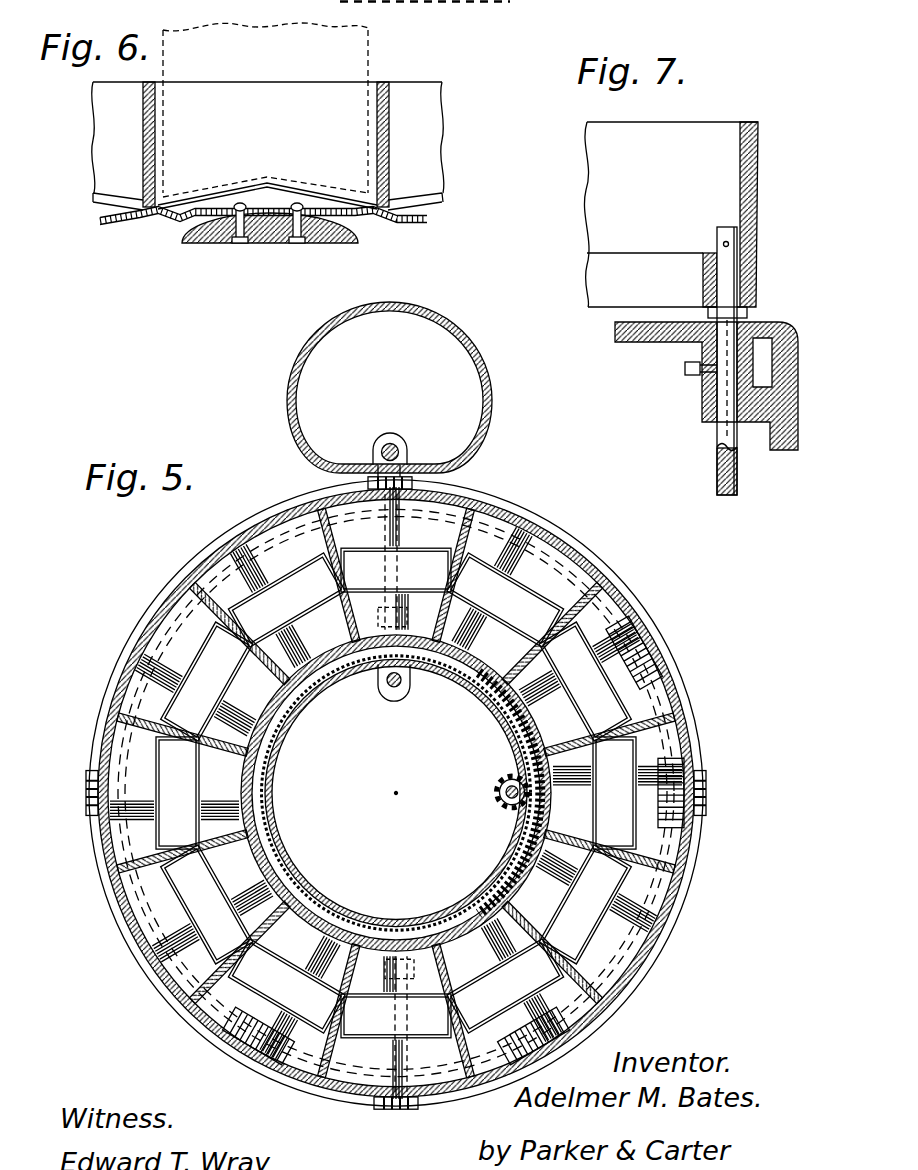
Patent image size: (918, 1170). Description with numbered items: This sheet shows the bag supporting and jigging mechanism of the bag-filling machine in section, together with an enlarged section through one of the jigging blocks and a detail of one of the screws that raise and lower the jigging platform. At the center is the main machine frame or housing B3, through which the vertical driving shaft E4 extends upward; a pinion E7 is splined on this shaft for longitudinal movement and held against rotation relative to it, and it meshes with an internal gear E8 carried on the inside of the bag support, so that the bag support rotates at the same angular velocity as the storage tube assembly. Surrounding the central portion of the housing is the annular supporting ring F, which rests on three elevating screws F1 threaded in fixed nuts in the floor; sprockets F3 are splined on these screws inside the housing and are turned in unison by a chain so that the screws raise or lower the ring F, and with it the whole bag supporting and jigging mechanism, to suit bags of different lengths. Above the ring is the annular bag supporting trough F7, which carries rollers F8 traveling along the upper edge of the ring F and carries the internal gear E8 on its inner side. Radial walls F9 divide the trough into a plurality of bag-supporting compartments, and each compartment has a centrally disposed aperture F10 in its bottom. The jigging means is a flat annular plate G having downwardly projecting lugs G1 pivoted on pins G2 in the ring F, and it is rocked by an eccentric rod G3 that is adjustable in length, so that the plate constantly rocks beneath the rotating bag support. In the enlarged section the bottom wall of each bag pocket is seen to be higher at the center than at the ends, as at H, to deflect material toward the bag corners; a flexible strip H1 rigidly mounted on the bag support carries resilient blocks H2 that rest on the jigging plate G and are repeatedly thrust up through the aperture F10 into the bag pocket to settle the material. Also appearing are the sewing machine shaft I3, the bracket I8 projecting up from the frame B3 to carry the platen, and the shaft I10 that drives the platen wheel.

In FIG. 7, the annular supporting ring F is at (755, 172).
In FIG. 5, the annular supporting ring F is at (692, 886).
In FIG. 7, the elevating screw F1 is at (743, 480).
In FIG. 7, the sprocket F3 is at (685, 368).
In FIG. 6, the annular bag supporting trough F7 is at (412, 92).
In FIG. 5, the annular bag supporting trough F7 is at (692, 829).
In FIG. 5, the roller F8 is at (370, 479).
In FIG. 6, the radial wall F9 is at (377, 100).
In FIG. 5, the radial wall F9 is at (133, 722).
In FIG. 6, the aperture F10 is at (212, 193).
In FIG. 5, the aperture F10 is at (274, 637).
In FIG. 5, the jigging plate G is at (152, 906).
In FIG. 5, the lug G1 is at (396, 790).
In FIG. 5, the pin G2 is at (396, 831).
In FIG. 5, the eccentric rod G3 is at (290, 525).
In FIG. 6, the raised bottom wall H is at (263, 181).
In FIG. 5, the raised bottom wall H is at (180, 665).
In FIG. 6, the flexible strip H1 is at (180, 223).
In FIG. 5, the flexible strip H1 is at (396, 793).
In FIG. 6, the resilient block H2 is at (260, 243).
In FIG. 5, the sewing machine shaft I3 is at (404, 695).
In FIG. 5, the bracket I8 is at (468, 339).
In FIG. 5, the platen drive shaft I10 is at (394, 441).
In FIG. 5, the vertical driving shaft E4 is at (503, 780).
In FIG. 5, the pinion E7 is at (495, 793).
In FIG. 5, the internal gear E8 is at (532, 836).
In FIG. 5, the main machine frame or housing B3 is at (318, 893).